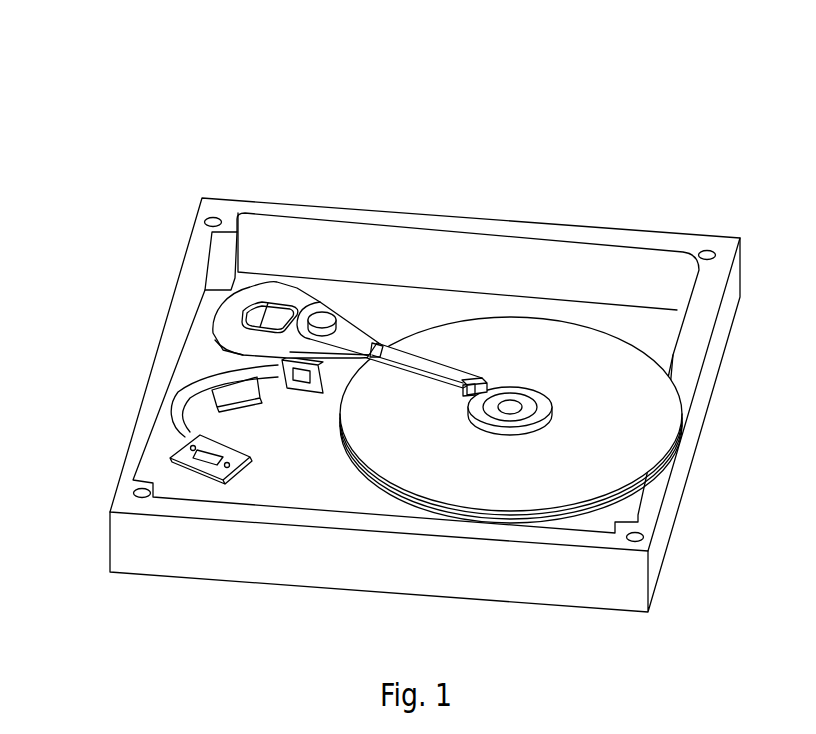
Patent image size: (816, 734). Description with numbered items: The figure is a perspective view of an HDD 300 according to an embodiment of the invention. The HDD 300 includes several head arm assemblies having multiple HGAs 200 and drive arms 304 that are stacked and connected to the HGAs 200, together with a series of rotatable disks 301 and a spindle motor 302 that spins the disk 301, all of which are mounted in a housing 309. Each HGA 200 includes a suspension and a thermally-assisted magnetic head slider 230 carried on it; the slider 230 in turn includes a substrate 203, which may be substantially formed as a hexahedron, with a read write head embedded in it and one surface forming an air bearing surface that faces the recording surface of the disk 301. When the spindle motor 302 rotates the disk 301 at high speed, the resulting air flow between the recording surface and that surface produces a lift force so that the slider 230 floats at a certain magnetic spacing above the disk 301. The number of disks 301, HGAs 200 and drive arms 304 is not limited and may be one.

The HDD 300 is at (98, 62).
The housing 309 is at (673, 278).
The rotatable disk 301 is at (587, 355).
The spindle motor 302 is at (510, 412).
The drive arm 304 is at (347, 328).
The HGA 200 is at (413, 362).
The thermally-assisted magnetic head slider 230 is at (463, 383).
The substrate 203 is at (474, 382).